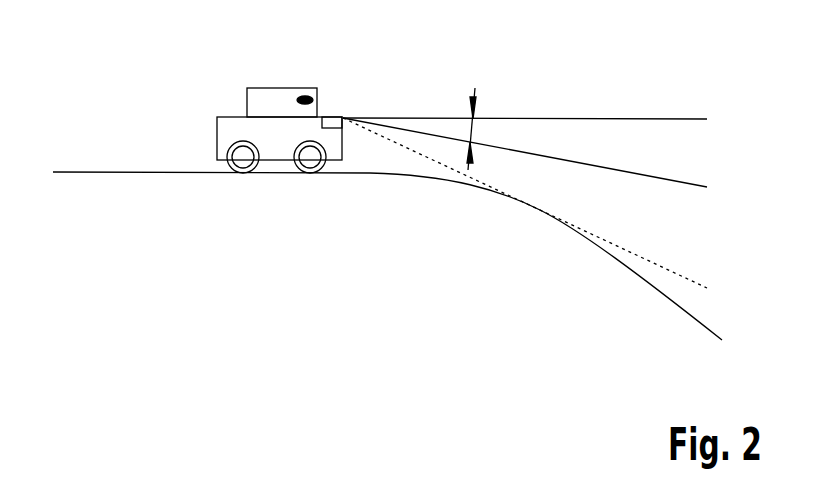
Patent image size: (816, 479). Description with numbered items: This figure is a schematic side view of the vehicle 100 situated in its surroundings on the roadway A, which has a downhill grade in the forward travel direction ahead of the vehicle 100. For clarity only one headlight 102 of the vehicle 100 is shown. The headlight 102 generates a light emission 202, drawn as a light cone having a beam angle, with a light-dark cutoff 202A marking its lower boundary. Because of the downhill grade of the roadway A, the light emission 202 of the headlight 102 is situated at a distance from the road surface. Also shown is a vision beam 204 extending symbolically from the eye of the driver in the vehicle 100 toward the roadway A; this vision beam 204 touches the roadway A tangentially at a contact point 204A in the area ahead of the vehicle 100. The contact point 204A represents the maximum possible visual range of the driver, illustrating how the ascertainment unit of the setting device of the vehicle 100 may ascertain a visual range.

The vehicle 100 is at (273, 88).
The headlight 102 is at (333, 115).
The light emission 202 is at (665, 148).
The light-dark cutoff 202A is at (672, 181).
The vision beam 204 is at (677, 277).
The contact point 204A is at (543, 197).
The roadway A is at (122, 172).